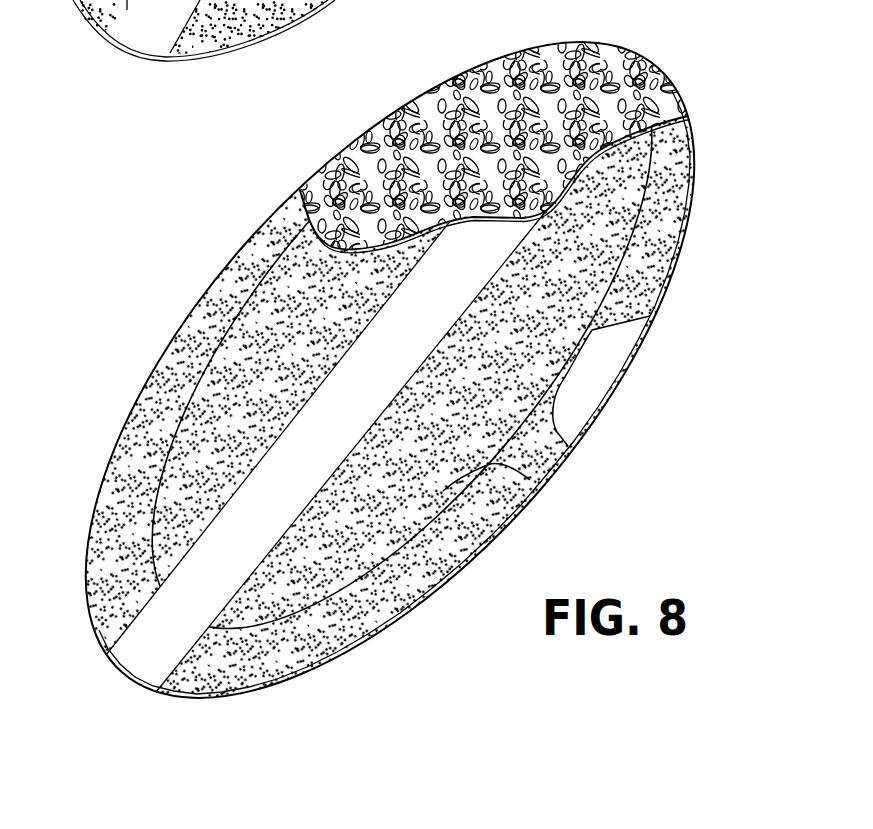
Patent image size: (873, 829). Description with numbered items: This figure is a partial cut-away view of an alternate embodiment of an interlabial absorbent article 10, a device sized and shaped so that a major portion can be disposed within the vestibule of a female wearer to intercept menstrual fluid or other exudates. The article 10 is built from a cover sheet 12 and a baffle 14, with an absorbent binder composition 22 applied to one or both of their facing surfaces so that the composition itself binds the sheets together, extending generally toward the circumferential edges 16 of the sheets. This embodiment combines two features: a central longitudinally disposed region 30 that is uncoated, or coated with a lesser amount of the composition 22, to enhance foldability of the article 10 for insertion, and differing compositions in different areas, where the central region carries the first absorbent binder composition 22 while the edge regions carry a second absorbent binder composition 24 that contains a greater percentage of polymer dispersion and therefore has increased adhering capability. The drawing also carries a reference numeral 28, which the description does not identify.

The interlabial absorbent article 10 is at (222, 205).
The cover sheet 12 is at (643, 80).
The baffle 14 is at (585, 389).
The circumferential edges 16 is at (688, 198).
The absorbent binder composition 22 is at (250, 337).
The second absorbent binder composition 24 is at (335, 196).
The fold line 28 is at (530, 480).
The uncoated region 30 is at (148, 628).